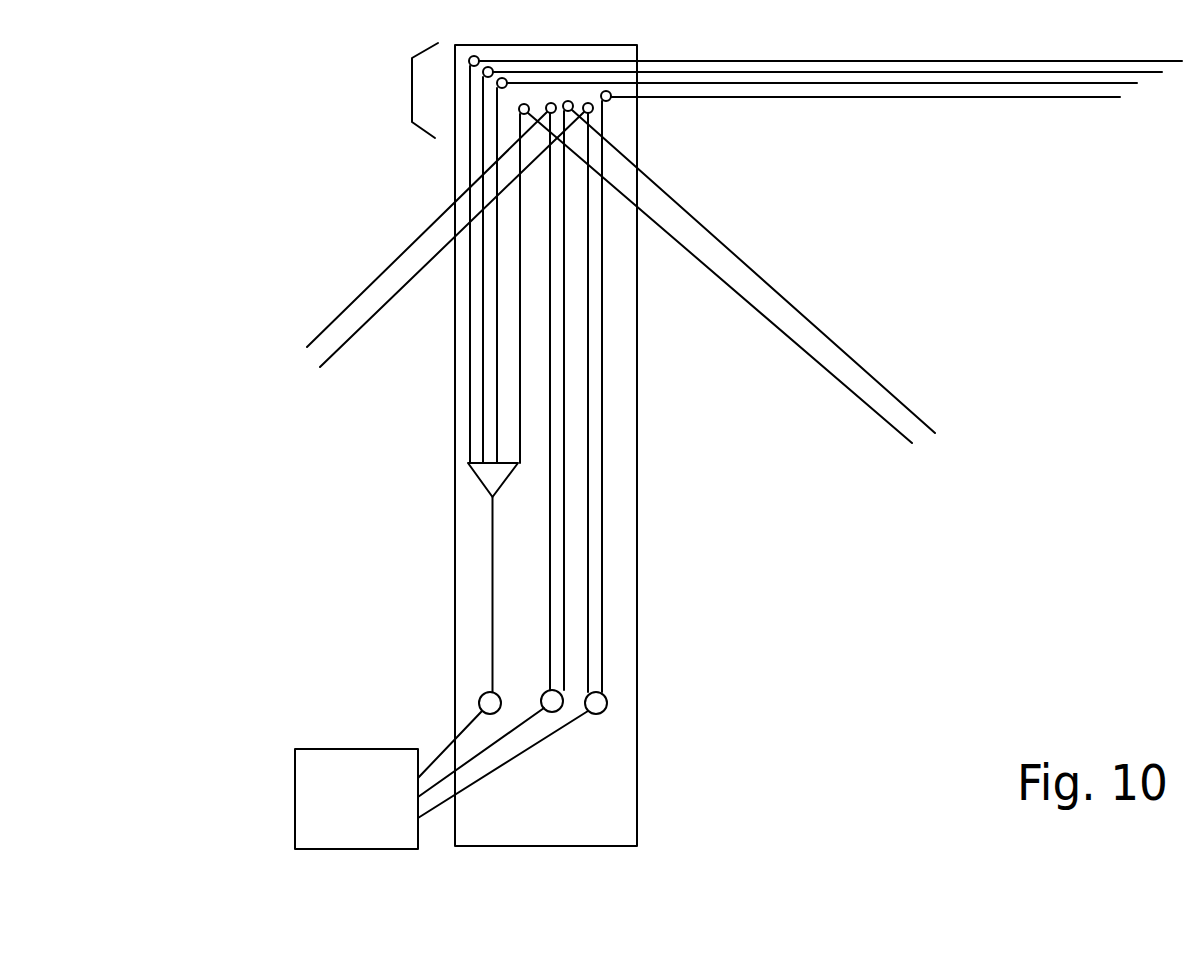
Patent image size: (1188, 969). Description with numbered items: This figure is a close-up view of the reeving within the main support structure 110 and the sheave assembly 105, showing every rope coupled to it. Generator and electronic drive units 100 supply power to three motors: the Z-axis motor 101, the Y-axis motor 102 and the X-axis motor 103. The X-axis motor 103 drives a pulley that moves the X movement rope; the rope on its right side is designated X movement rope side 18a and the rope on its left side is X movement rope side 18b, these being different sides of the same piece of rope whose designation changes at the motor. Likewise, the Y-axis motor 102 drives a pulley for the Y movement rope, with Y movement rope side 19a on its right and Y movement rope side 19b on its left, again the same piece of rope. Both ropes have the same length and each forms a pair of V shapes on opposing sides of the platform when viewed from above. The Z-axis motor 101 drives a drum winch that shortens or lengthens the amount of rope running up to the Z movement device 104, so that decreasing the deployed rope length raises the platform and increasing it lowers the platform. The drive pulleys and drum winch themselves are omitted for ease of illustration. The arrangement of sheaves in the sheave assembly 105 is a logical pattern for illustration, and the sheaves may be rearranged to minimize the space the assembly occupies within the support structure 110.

The X movement rope side 18a is at (491, 141).
The X movement rope side 18b is at (340, 357).
The Y movement rope side 19a is at (478, 158).
The Y movement rope side 19b is at (470, 175).
The generator and electronic drive units 100 is at (300, 749).
The Z-axis motor 101 is at (483, 693).
The Y-axis motor 102 is at (558, 693).
The X-axis motor 103 is at (606, 704).
The Z movement device 104 is at (478, 483).
The sheave assembly 105 is at (412, 88).
The support structure 110 is at (640, 813).